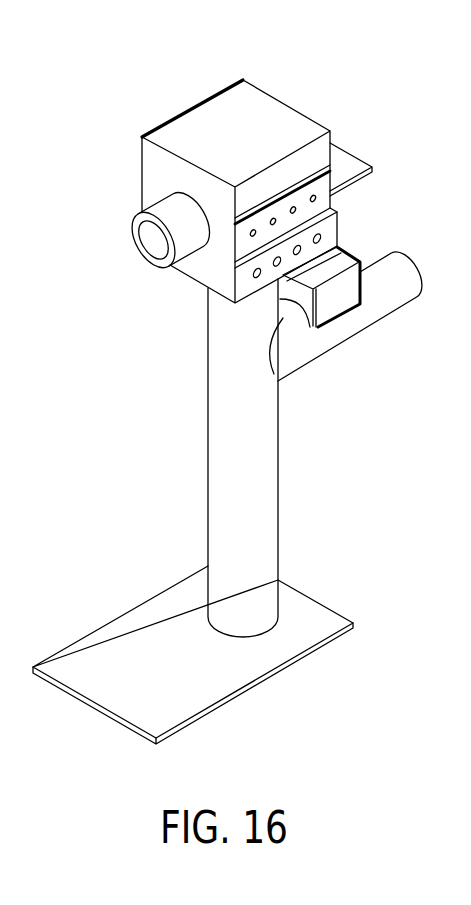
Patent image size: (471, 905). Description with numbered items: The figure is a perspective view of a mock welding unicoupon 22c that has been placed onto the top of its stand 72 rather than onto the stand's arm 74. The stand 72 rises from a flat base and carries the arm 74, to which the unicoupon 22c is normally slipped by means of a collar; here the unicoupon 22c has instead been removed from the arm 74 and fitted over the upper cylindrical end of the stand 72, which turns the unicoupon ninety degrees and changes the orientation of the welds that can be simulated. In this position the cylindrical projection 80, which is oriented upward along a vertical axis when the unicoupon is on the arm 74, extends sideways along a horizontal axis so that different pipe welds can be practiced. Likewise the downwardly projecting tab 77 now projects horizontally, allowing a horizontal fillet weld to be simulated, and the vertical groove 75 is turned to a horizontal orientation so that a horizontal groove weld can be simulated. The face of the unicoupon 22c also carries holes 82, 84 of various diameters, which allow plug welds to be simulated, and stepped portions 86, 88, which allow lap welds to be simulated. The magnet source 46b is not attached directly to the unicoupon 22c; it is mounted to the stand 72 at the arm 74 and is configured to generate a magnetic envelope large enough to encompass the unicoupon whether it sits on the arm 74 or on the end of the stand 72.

The mock welding unicoupon 22c is at (237, 394).
The stand 72 is at (278, 505).
The arm 74 is at (346, 341).
The vertical groove 75 is at (145, 191).
The downwardly projecting tab 77 is at (352, 155).
The cylindrical projection 80 is at (131, 240).
The hole 82 is at (339, 246).
The hole 84 is at (273, 221).
The stepped portion 86 is at (260, 232).
The stepped portion 88 is at (289, 208).
The magnet source 46b is at (353, 257).